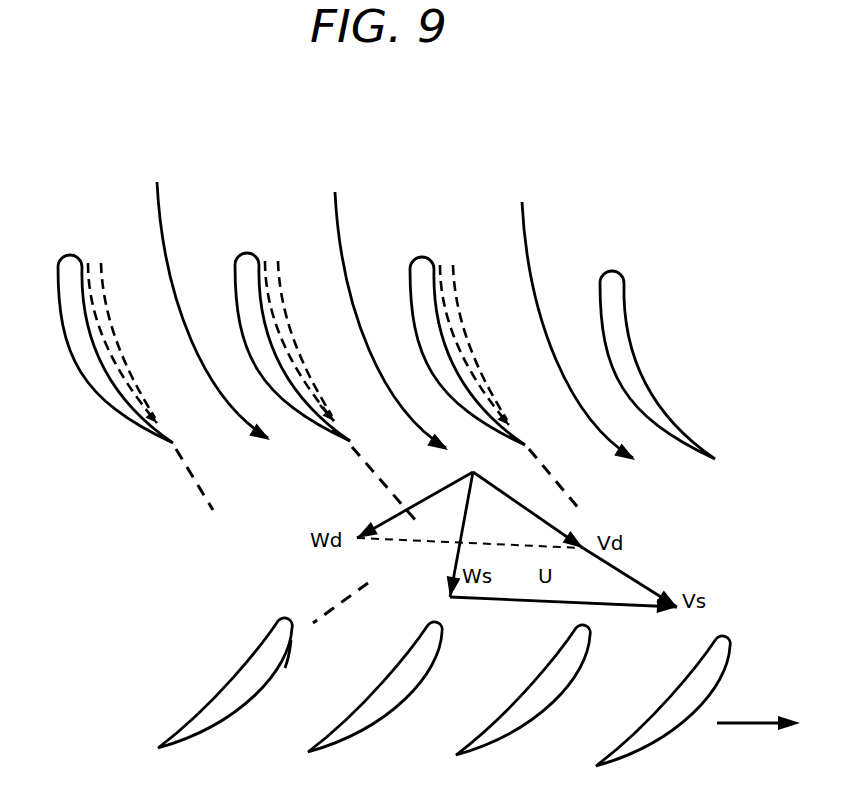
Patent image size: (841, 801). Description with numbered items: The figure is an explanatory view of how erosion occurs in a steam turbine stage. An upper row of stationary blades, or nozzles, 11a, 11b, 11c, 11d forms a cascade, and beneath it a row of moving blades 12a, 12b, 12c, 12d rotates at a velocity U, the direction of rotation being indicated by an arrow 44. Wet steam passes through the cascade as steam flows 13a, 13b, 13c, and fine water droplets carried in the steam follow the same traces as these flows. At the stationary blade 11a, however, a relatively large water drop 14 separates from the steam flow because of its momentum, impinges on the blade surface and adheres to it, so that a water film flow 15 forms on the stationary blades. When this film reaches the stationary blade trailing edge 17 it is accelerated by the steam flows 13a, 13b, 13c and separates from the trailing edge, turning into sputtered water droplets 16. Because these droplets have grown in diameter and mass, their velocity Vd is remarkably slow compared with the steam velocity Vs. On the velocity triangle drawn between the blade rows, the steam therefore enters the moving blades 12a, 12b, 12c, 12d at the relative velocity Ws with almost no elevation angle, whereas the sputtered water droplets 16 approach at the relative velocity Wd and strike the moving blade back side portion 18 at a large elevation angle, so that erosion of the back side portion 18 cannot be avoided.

The stationary blade 11a is at (62, 257).
The stationary blade 11b is at (239, 256).
The stationary blade 11c is at (413, 259).
The stationary blade 11d is at (604, 271).
The moving blade 12a is at (183, 748).
The moving blade 12b is at (350, 744).
The moving blade 12c is at (500, 748).
The moving blade 12d is at (627, 763).
The steam flow 13a is at (160, 185).
The steam flow 13b is at (338, 193).
The steam flow 13c is at (525, 205).
The water drop 14 is at (282, 302).
The water film flow 15 is at (323, 413).
The sputtered water droplets 16 is at (378, 470).
The stationary blade trailing edge 17 is at (347, 443).
The moving blade back side portion 18 is at (285, 662).
The rotor rotation direction 44 is at (758, 737).